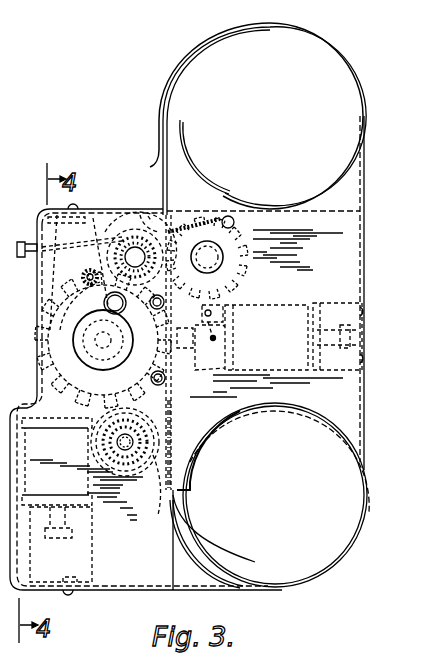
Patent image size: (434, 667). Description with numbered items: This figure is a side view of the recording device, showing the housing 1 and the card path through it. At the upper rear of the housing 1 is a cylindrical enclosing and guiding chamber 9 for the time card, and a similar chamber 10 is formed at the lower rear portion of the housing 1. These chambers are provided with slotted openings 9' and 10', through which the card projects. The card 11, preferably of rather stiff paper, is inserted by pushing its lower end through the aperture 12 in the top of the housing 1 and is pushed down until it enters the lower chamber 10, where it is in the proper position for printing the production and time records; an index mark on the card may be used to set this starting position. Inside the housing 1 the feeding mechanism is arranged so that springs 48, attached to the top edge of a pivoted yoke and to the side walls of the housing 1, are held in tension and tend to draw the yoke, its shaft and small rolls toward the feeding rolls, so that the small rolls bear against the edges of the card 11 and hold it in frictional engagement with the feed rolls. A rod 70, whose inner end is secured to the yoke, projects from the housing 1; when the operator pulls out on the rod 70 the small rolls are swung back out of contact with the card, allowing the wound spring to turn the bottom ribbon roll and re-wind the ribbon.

The housing 1 is at (342, 262).
The cylindrical enclosing and guiding chamber 9 is at (271, 116).
The slotted opening 9' is at (204, 135).
The chamber 10 is at (294, 495).
The slotted opening 10' is at (214, 508).
The card 11 is at (165, 190).
The aperture 12 is at (150, 210).
The springs 48 is at (205, 215).
The rod 70 is at (17, 240).